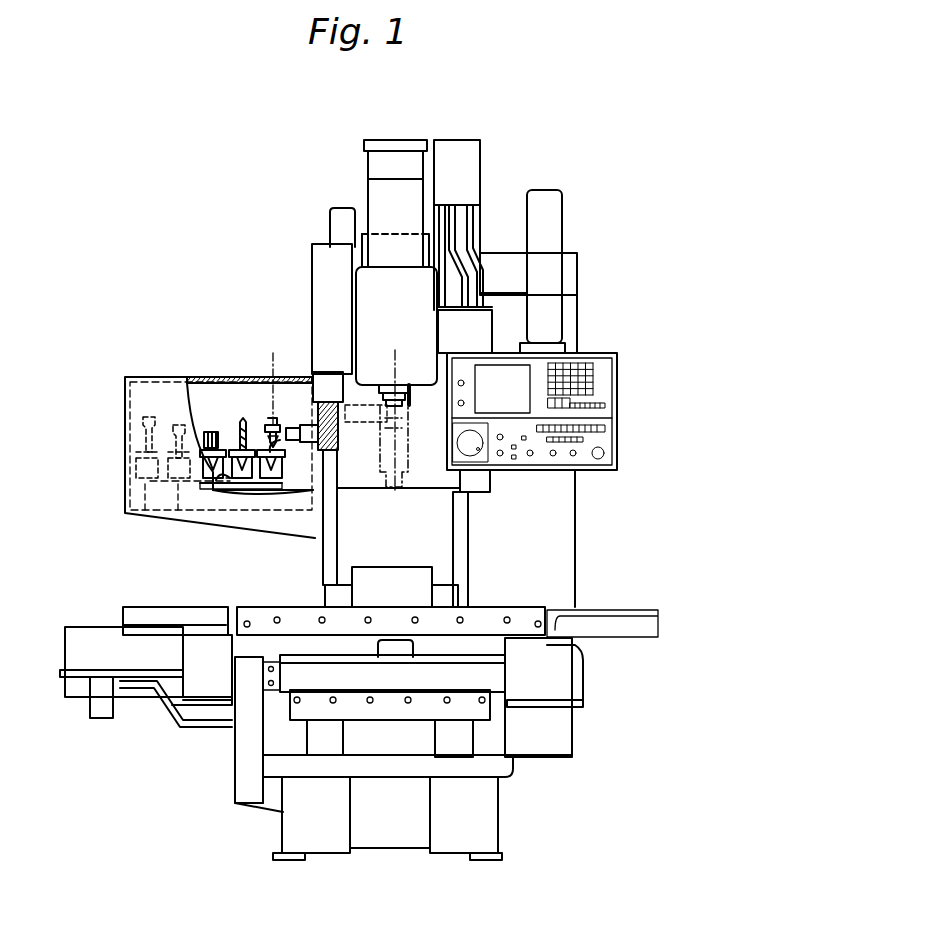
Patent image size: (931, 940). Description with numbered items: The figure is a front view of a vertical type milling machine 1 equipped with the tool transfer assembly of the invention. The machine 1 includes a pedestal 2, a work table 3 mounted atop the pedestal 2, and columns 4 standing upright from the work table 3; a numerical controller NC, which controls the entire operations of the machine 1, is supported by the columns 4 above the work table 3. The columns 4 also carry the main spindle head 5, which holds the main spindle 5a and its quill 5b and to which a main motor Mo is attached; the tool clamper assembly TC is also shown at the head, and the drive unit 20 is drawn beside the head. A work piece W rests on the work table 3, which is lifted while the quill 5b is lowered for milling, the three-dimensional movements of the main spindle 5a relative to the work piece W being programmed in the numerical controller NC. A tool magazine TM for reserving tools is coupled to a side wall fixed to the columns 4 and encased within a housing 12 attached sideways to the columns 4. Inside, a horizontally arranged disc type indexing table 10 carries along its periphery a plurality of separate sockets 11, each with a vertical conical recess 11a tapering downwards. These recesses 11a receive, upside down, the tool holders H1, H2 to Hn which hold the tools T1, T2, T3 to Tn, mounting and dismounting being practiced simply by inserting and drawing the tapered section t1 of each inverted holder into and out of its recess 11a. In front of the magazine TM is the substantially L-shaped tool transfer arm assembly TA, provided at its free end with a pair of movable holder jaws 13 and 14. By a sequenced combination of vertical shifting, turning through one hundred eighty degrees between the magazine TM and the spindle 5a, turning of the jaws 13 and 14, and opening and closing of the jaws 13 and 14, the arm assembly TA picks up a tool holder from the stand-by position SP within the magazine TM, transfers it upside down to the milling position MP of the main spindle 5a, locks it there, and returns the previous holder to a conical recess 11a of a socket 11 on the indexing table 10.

The milling machine 1 is at (493, 184).
The pedestal 2 is at (488, 806).
The work table 3 is at (498, 600).
The columns 4 is at (468, 559).
The main spindle head 5 is at (365, 297).
The main spindle 5a is at (410, 424).
The quill 5b is at (412, 400).
The indexing table 10 is at (240, 490).
The socket 11 is at (137, 468).
The conical recess 11a is at (258, 480).
The housing 12 is at (148, 377).
The holder jaw 13 is at (300, 441).
The holder jaw 14 is at (315, 456).
The drive unit 20 is at (327, 250).
The tool clamper assembly TC is at (392, 156).
The main motor Mo is at (365, 233).
The milling position MP is at (396, 378).
The numerical controller NC is at (590, 353).
The work piece W is at (432, 572).
The tool magazine TM is at (213, 390).
The tool T1 is at (267, 405).
The tool T2 is at (238, 408).
The tool T3 is at (207, 432).
The tool Tn is at (132, 413).
The tool holder H1 is at (264, 450).
The tool holder H2 is at (235, 450).
The tool holder Hn is at (140, 448).
The stand-by position SP is at (277, 378).
The tool transfer arm assembly TA is at (308, 420).
The tapered section t1 is at (278, 448).